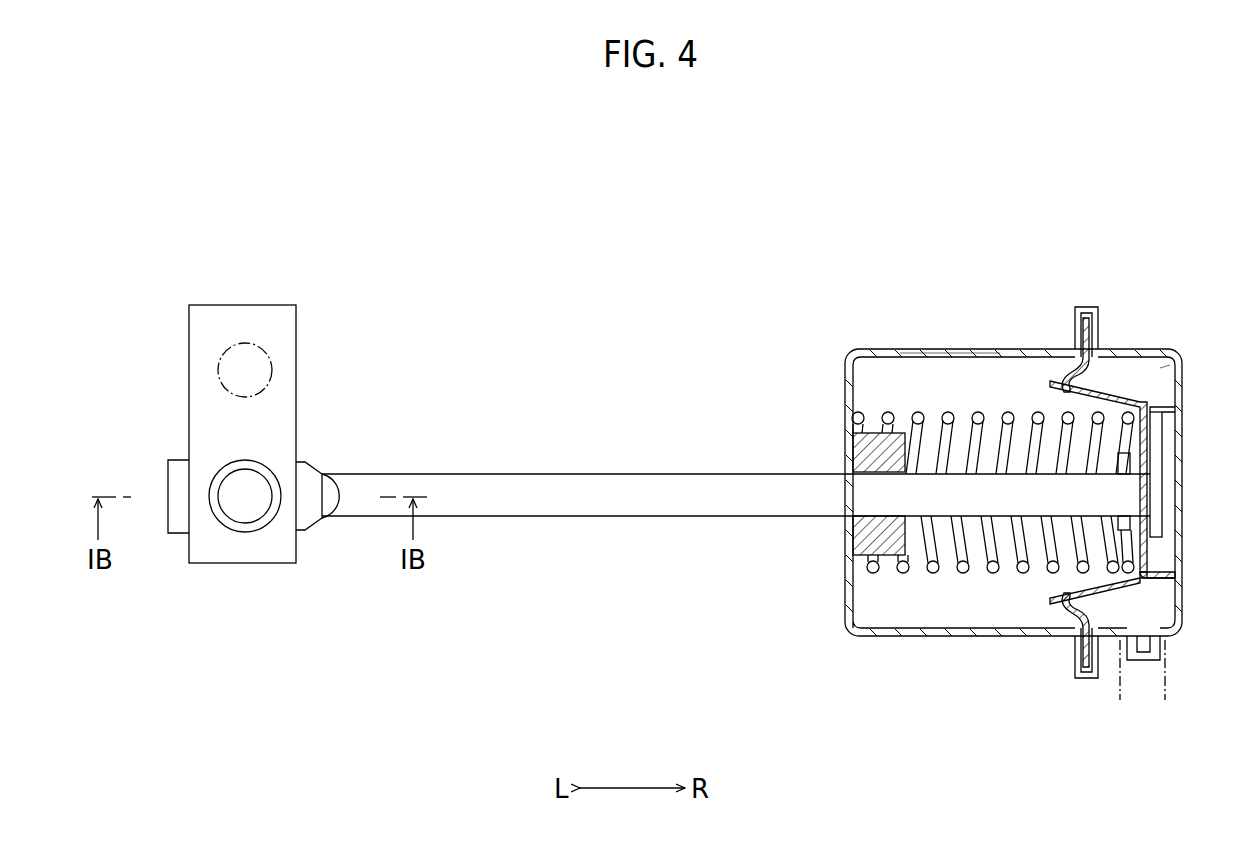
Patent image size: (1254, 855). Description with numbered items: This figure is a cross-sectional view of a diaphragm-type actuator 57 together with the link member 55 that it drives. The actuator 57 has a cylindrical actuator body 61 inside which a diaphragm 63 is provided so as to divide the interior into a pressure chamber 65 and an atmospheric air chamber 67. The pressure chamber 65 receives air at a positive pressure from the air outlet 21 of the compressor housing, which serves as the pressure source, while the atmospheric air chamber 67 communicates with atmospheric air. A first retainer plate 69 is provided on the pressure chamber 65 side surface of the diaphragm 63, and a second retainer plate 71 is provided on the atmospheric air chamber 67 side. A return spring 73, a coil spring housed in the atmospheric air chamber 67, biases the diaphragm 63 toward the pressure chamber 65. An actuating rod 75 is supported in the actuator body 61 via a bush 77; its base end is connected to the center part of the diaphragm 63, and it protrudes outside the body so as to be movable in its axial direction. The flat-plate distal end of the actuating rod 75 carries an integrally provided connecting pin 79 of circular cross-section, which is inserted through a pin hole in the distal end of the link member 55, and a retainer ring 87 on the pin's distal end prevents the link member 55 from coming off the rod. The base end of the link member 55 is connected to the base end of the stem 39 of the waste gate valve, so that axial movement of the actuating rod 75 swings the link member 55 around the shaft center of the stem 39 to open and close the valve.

The air outlet 21 is at (1148, 685).
The stem 39 is at (254, 345).
The link member 55 is at (197, 368).
The actuator 57 is at (793, 268).
The actuator body 61 is at (985, 349).
The diaphragm 63 is at (1062, 372).
The pressure chamber 65 is at (1160, 368).
The atmospheric air chamber 67 is at (937, 358).
The first retainer plate 69 is at (1162, 440).
The second retainer plate 71 is at (1150, 548).
The return spring 73 is at (930, 574).
The actuating rod 75 is at (605, 472).
The bush 77 is at (853, 440).
The connecting pin 79 is at (246, 512).
The retainer ring 87 is at (222, 512).